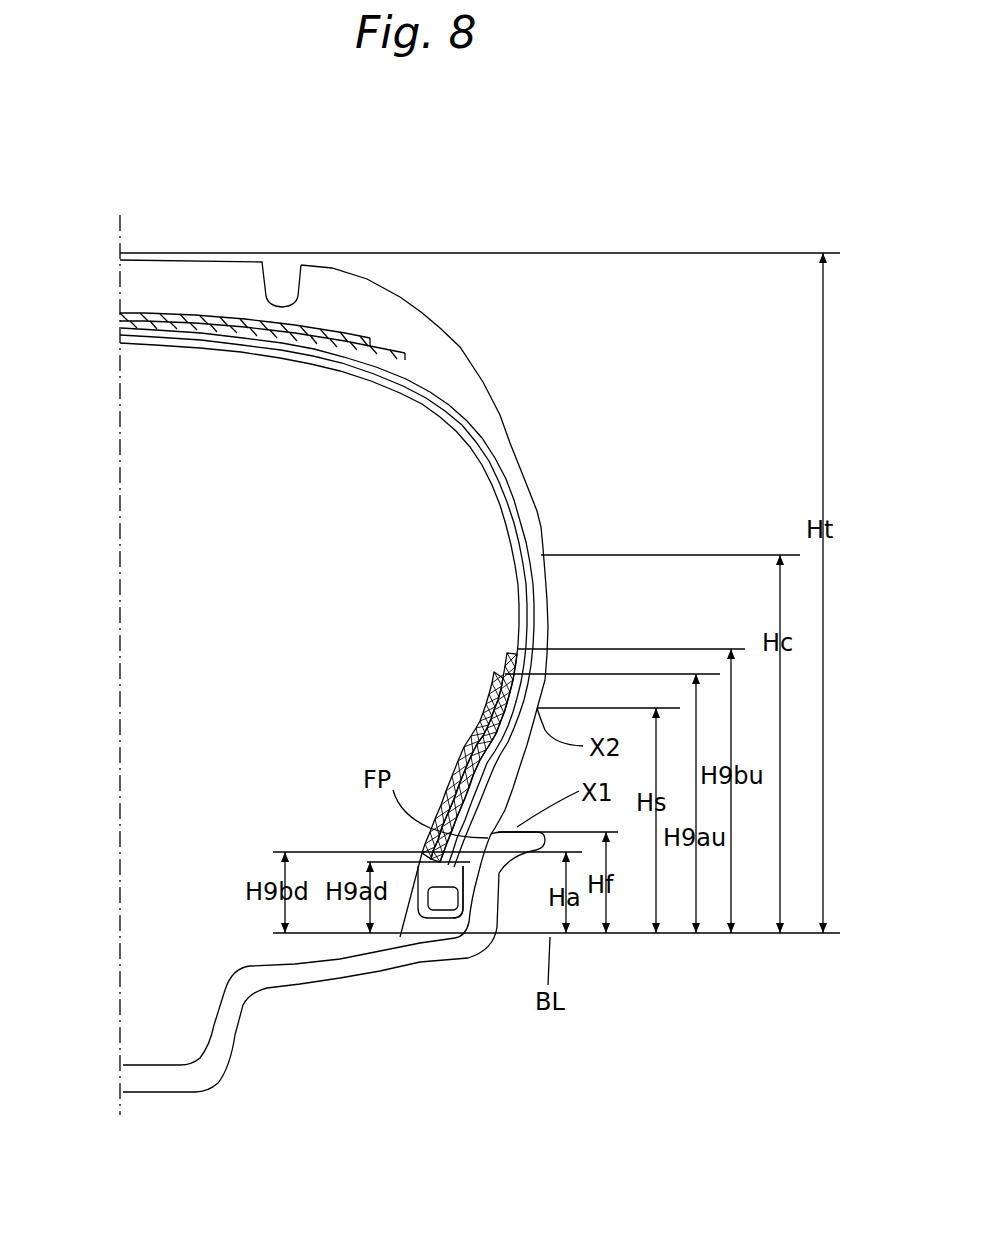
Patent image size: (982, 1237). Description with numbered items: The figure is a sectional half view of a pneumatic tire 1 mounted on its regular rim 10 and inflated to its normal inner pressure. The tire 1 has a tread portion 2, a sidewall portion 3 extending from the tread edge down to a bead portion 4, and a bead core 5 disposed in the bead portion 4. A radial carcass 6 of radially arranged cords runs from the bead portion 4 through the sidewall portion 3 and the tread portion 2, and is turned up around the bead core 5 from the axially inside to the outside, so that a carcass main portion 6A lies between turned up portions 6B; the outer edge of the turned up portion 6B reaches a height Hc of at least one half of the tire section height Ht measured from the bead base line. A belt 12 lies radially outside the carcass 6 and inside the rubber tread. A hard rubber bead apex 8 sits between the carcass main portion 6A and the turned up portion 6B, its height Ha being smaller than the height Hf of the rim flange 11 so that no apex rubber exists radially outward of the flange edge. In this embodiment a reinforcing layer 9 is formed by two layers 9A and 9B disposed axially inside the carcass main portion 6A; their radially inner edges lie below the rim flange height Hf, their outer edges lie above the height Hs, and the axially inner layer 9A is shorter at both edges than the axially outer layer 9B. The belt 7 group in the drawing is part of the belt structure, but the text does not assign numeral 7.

The tire 1 is at (434, 272).
The tread portion 2 is at (355, 250).
The sidewall portion 3 is at (562, 528).
The bead portion 4 is at (391, 838).
The bead core 5 is at (440, 902).
The radial carcass 6 is at (250, 567).
The carcass main portion 6A is at (510, 517).
The carcass turned up portion 6B is at (523, 575).
The belt layer 7 is at (120, 315).
The bead apex 8 is at (462, 920).
The reinforcing layer 9 is at (316, 672).
The axially inner reinforcing layer 9A is at (493, 673).
The axially outer reinforcing layer 9B is at (506, 653).
The regular rim 10 is at (345, 973).
The rim flange 11 is at (498, 914).
The belt 12 is at (194, 310).